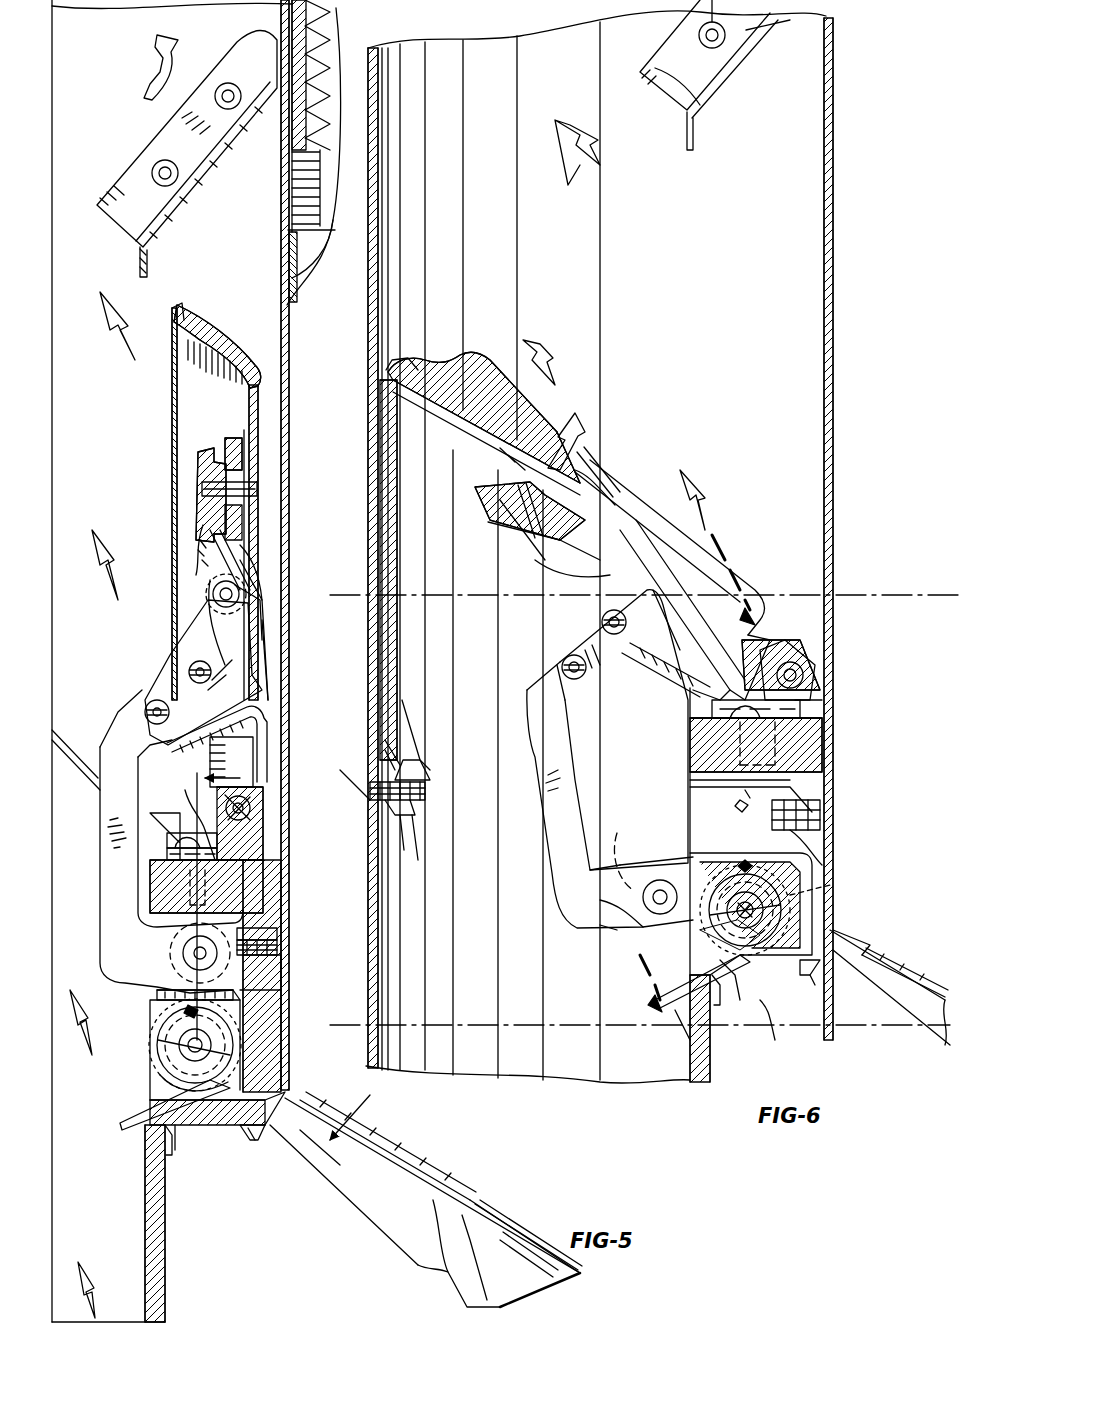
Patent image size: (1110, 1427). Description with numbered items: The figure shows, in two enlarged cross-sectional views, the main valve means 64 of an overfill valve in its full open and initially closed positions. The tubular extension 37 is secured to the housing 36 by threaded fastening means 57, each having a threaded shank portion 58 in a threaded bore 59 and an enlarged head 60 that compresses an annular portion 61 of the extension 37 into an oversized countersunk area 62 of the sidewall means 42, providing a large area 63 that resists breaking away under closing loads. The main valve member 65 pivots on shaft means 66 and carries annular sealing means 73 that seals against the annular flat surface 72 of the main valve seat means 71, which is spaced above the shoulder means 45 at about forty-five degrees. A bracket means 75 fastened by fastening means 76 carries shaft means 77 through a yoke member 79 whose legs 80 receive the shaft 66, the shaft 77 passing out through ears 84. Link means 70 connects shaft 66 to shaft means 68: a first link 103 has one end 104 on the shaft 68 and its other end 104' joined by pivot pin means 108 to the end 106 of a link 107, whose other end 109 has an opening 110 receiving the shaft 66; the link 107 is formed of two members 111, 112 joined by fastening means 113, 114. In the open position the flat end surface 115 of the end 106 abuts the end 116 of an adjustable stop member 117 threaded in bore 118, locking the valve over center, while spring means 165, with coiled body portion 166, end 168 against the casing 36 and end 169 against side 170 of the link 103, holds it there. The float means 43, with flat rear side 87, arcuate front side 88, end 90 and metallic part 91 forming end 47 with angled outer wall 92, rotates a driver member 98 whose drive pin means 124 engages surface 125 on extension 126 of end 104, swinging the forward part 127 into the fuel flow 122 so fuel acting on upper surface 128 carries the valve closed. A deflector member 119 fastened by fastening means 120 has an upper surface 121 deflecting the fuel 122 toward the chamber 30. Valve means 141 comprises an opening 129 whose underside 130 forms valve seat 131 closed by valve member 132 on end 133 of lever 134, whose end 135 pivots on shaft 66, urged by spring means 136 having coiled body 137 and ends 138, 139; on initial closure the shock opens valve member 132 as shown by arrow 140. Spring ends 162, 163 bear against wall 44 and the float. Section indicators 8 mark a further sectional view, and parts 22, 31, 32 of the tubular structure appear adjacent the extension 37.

In FIG. 5, the section line 8- 8 is at (283, 966).
In FIG. 5, the flange 22 is at (312, 279).
In FIG. 5, the chamber 30 is at (289, 265).
In FIG. 5, the member 31 is at (287, 232).
In FIG. 5, the threaded member 32 is at (300, 120).
In FIG. 5, the housing 36 is at (145, 1200).
In FIG. 6, the housing 36 is at (700, 1090).
In FIG. 5, the tubular extension 37 is at (289, 468).
In FIG. 6, the tubular extension 37 is at (835, 108).
In FIG. 5, the sidewall means 42 is at (305, 960).
In FIG. 5, the float means 43 is at (505, 1198).
In FIG. 6, the float means 43 is at (920, 960).
In FIG. 5, the wall 44 is at (167, 1247).
In FIG. 6, the wall 44 is at (712, 1075).
In FIG. 5, the shoulder means 45 is at (185, 1160).
In FIG. 6, the shoulder means 45 is at (777, 1027).
In FIG. 5, the end 47 is at (322, 1185).
In FIG. 6, the end 47 is at (895, 1030).
In FIG. 6, the threaded fastening means 57 is at (418, 765).
In FIG. 6, the threaded shank portion 58 is at (428, 795).
In FIG. 6, the threaded bore 59 is at (418, 818).
In FIG. 5, the enlarged head 60 is at (350, 770).
In FIG. 6, the enlarged head 60 is at (368, 778).
In FIG. 6, the annular portion 61 is at (420, 740).
In FIG. 6, the oversized countersunk area 62 is at (420, 840).
In FIG. 5, the relatively large area 63 is at (341, 851).
In FIG. 6, the relatively large area 63 is at (372, 838).
In FIG. 6, the main valve means 64 is at (470, 345).
In FIG. 5, the main valve member 65 is at (258, 372).
In FIG. 6, the main valve member 65 is at (490, 360).
In FIG. 5, the shaft means 66 is at (250, 600).
In FIG. 6, the shaft means 66 is at (665, 493).
In FIG. 5, the shaft means 68 is at (180, 1046).
In FIG. 6, the shaft means 68 is at (785, 912).
In FIG. 5, the link means 70 is at (88, 760).
In FIG. 6, the link means 70 is at (538, 825).
In FIG. 5, the main valve seat means 71 is at (380, 392).
In FIG. 5, the annular flat surface 72 is at (375, 405).
In FIG. 6, the annular flat surface 72 is at (380, 400).
In FIG. 5, the annular sealing means 73 is at (178, 312).
In FIG. 6, the annular sealing means 73 is at (385, 330).
In FIG. 5, the bracket means 75 is at (265, 862).
In FIG. 6, the bracket means 75 is at (810, 720).
In FIG. 5, the fastening means 76 is at (190, 820).
In FIG. 6, the fastening means 76 is at (824, 732).
In FIG. 5, the shaft means 77 is at (252, 805).
In FIG. 6, the shaft means 77 is at (790, 662).
In FIG. 5, the yoke member 79 is at (270, 745).
In FIG. 6, the yoke member 79 is at (765, 635).
In FIG. 5, the legs 80 is at (270, 720).
In FIG. 6, the legs 80 is at (742, 630).
In FIG. 5, the ears 84 is at (262, 840).
In FIG. 6, the ears 84 is at (800, 700).
In FIG. 5, the flat rear side 87 is at (455, 1305).
In FIG. 5, the arcuate front side 88 is at (535, 1245).
In FIG. 5, the end 90 is at (425, 1268).
In FIG. 5, the metallic part 91 is at (378, 1130).
In FIG. 6, the metallic part 91 is at (870, 960).
In FIG. 5, the angled outer wall 92 is at (420, 1148).
In FIG. 6, the driver member 98 is at (755, 965).
In FIG. 6, the first link 103 is at (660, 860).
In FIG. 5, the end 104 is at (240, 1050).
In FIG. 6, the end 104 is at (784, 873).
In FIG. 6, the other end 104' is at (623, 845).
In FIG. 5, the end 106 is at (100, 955).
In FIG. 6, the end 106 is at (600, 930).
In FIG. 5, the link 107 is at (90, 880).
In FIG. 6, the link 107 is at (530, 778).
In FIG. 5, the pivot pin means 108 is at (183, 952).
In FIG. 6, the pivot pin means 108 is at (655, 890).
In FIG. 5, the other end 109 is at (210, 640).
In FIG. 6, the other end 109 is at (735, 612).
In FIG. 5, the opening 110 is at (208, 606).
In FIG. 5, the member 111 is at (115, 760).
In FIG. 6, the member 111 is at (535, 728).
In FIG. 5, the member 112 is at (262, 688).
In FIG. 6, the member 112 is at (622, 730).
In FIG. 5, the fastening means 113 is at (155, 702).
In FIG. 6, the fastening means 113 is at (568, 658).
In FIG. 5, the fastening means 114 is at (195, 664).
In FIG. 6, the fastening means 114 is at (600, 622).
In FIG. 5, the flat end surface 115 is at (262, 965).
In FIG. 5, the end 116 is at (262, 915).
In FIG. 6, the end 116 is at (805, 790).
In FIG. 5, the adjustable stop member 117 is at (275, 945).
In FIG. 6, the adjustable stop member 117 is at (822, 815).
In FIG. 6, the threaded bore 118 is at (815, 846).
In FIG. 5, the deflector member 119 is at (197, 188).
In FIG. 6, the deflector member 119 is at (735, 80).
In FIG. 5, the fastening means 120 is at (215, 99).
In FIG. 5, the upper surface 121 is at (170, 207).
In FIG. 6, the upper surface 121 is at (700, 75).
In FIG. 5, the arrows 122 is at (152, 55).
In FIG. 5, the drive pin means 124 is at (260, 996).
In FIG. 6, the drive pin means 124 is at (742, 855).
In FIG. 5, the surface 125 is at (155, 1020).
In FIG. 6, the surface 125 is at (719, 802).
In FIG. 5, the extension 126 is at (185, 1060).
In FIG. 6, the extension 126 is at (715, 955).
In FIG. 5, the forward part 127 is at (212, 350).
In FIG. 6, the forward part 127 is at (440, 368).
In FIG. 5, the upper surface 128 is at (262, 410).
In FIG. 6, the upper surface 128 is at (553, 359).
In FIG. 6, the opening 129 is at (535, 410).
In FIG. 6, the underside 130 is at (515, 425).
In FIG. 6, the annular valve seat 131 is at (530, 450).
In FIG. 5, the valve member 132 is at (228, 436).
In FIG. 6, the valve member 132 is at (465, 493).
In FIG. 5, the end 133 is at (196, 458).
In FIG. 6, the end 133 is at (492, 530).
In FIG. 5, the lever 134 is at (190, 508).
In FIG. 6, the lever 134 is at (540, 565).
In FIG. 5, the other end 135 is at (200, 575).
In FIG. 5, the spring means 136 is at (260, 542).
In FIG. 5, the coiled body portion 137 is at (262, 552).
In FIG. 5, the end 138 is at (268, 650).
In FIG. 6, the end 138 is at (717, 547).
In FIG. 5, the other end 139 is at (190, 530).
In FIG. 6, the other end 139 is at (610, 478).
In FIG. 6, the arrow 140 is at (580, 420).
In FIG. 5, the valve means 141 is at (260, 454).
In FIG. 6, the valve means 141 is at (590, 460).
In FIG. 5, the end 162 is at (165, 1148).
In FIG. 6, the end 162 is at (715, 1030).
In FIG. 5, the other end 163 is at (260, 1135).
In FIG. 6, the other end 163 is at (818, 1025).
In FIG. 6, the spring means 165 is at (648, 1003).
In FIG. 6, the coiled body portion 166 is at (834, 886).
In FIG. 5, the end 168 is at (118, 1125).
In FIG. 6, the end 168 is at (675, 1010).
In FIG. 5, the other end 169 is at (157, 996).
In FIG. 6, the other end 169 is at (630, 975).
In FIG. 6, the side 170 is at (650, 912).